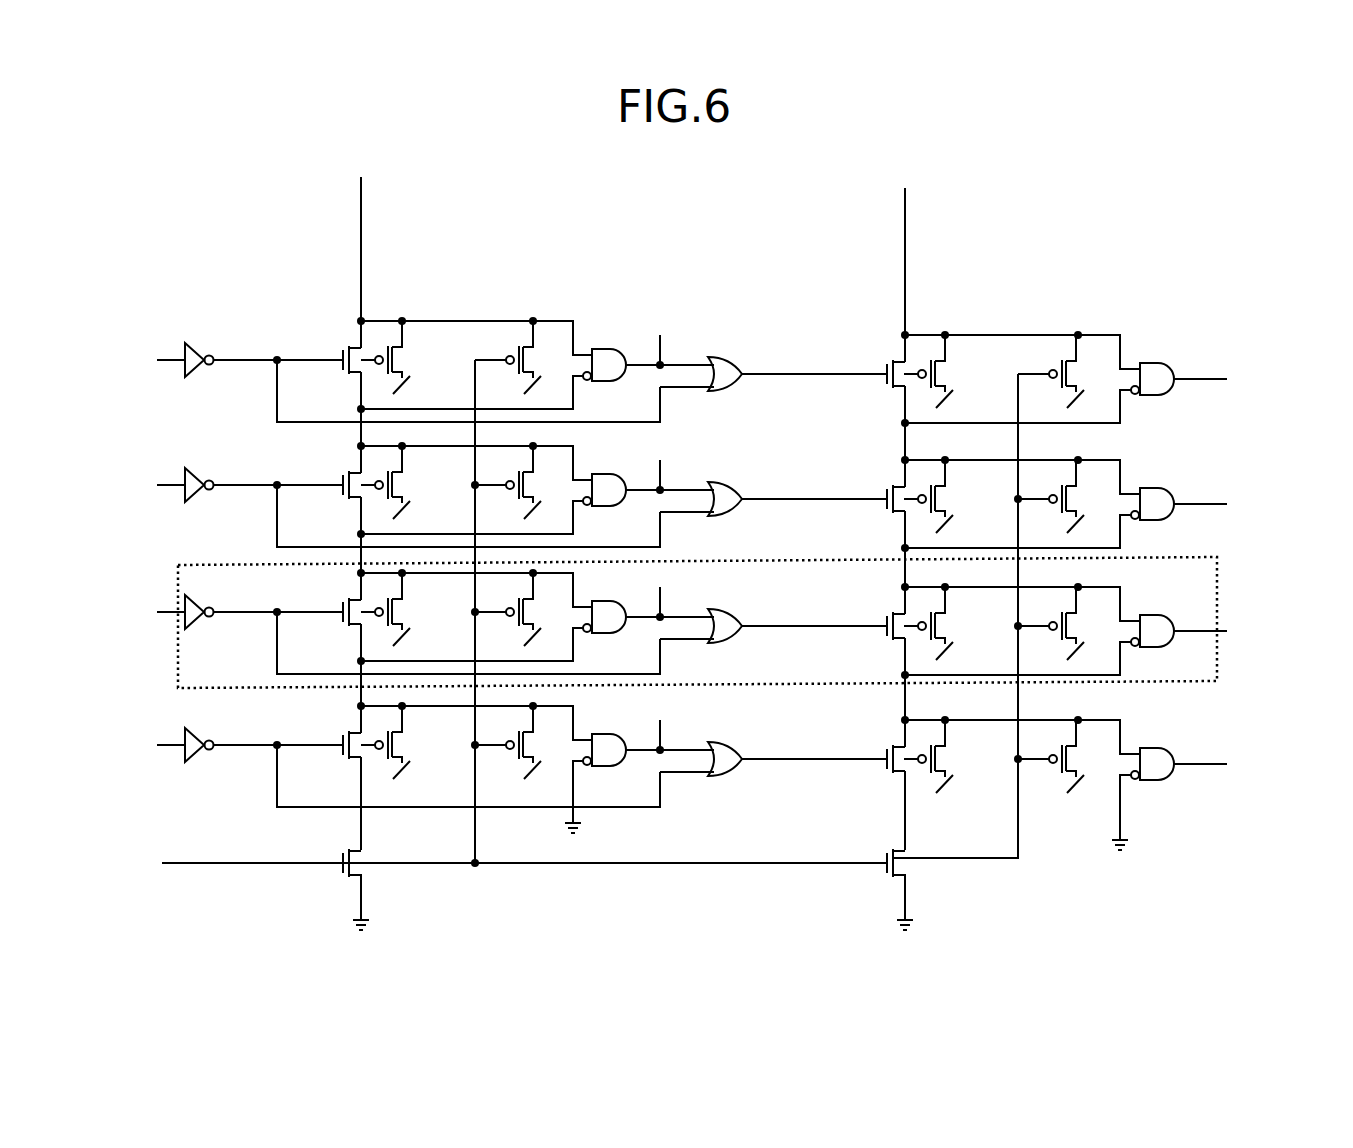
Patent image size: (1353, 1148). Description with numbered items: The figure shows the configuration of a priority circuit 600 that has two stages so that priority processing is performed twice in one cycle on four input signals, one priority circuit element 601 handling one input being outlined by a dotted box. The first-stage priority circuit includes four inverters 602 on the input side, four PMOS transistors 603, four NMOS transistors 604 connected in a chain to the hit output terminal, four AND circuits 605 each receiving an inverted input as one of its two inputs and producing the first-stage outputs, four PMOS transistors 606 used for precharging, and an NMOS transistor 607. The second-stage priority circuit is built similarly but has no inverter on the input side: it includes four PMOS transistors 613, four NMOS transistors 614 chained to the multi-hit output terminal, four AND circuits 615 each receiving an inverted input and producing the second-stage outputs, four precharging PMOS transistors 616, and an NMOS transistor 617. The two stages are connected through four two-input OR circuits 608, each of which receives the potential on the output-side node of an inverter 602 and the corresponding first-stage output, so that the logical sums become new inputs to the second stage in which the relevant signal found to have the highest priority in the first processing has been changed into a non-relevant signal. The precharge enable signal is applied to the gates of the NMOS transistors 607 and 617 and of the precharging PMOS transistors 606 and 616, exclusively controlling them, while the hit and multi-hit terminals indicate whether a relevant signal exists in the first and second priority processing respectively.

The priority circuit 600 is at (1179, 217).
The priority circuit element 601 is at (1226, 590).
The inverter 602 is at (195, 370).
The PMOS transistor 603 is at (395, 348).
The NMOS transistor 604 is at (344, 372).
The AND circuit 605 is at (628, 382).
The PMOS transistor used for precharging 606 is at (527, 351).
The NMOS transistor 607 is at (355, 878).
The two-input OR circuit 608 is at (725, 391).
The PMOS transistor 613 is at (938, 362).
The NMOS transistor 614 is at (888, 386).
The AND circuit 615 is at (1160, 395).
The PMOS transistor used for precharging 616 is at (1070, 365).
The NMOS transistor 617 is at (899, 876).